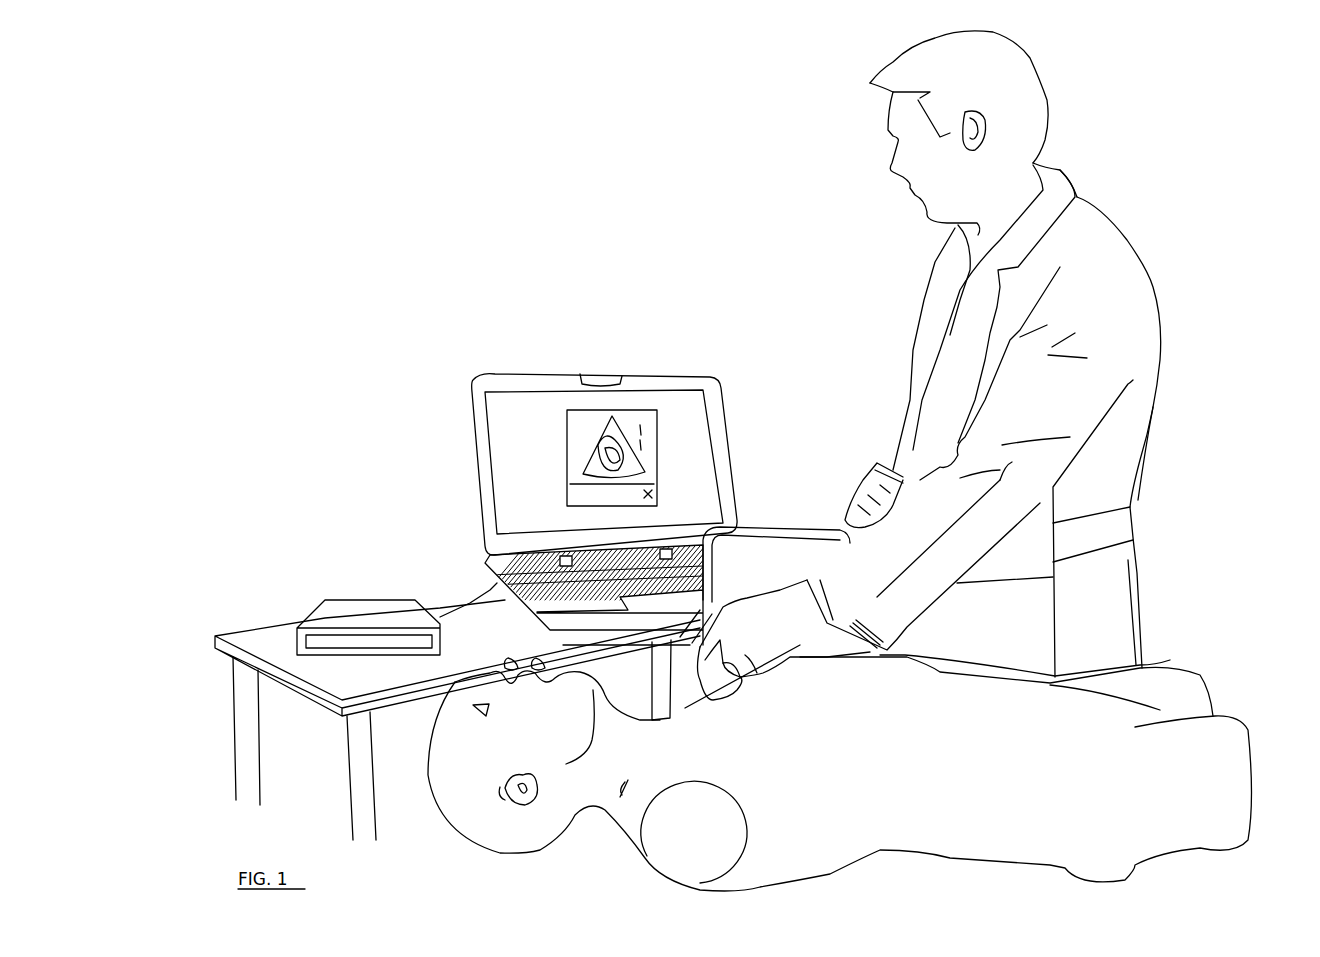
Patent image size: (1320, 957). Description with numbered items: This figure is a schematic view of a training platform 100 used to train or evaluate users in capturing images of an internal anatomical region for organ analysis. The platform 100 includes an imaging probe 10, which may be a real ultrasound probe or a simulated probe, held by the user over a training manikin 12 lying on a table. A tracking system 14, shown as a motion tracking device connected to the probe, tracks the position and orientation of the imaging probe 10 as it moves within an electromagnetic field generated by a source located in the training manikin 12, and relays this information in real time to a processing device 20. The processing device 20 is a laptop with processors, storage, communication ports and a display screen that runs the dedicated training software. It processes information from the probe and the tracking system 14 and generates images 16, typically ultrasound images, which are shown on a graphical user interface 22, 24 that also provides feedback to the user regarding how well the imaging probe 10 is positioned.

The training platform 100 is at (508, 296).
The imaging probe 10 is at (722, 600).
The training manikin 12 is at (1172, 680).
The tracking system 14 is at (370, 605).
The images 16 is at (577, 434).
The processing device 20 is at (510, 578).
The graphical user interface 22 is at (680, 360).
The graphical user interface 24 is at (719, 381).